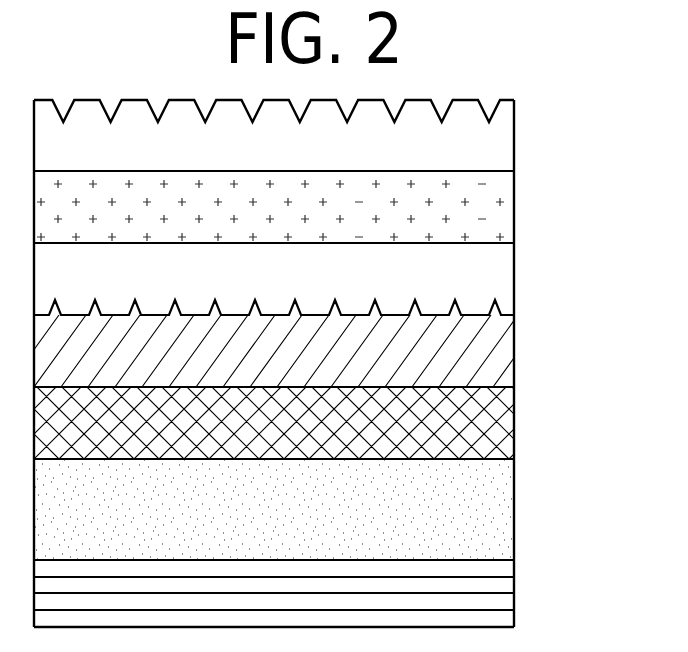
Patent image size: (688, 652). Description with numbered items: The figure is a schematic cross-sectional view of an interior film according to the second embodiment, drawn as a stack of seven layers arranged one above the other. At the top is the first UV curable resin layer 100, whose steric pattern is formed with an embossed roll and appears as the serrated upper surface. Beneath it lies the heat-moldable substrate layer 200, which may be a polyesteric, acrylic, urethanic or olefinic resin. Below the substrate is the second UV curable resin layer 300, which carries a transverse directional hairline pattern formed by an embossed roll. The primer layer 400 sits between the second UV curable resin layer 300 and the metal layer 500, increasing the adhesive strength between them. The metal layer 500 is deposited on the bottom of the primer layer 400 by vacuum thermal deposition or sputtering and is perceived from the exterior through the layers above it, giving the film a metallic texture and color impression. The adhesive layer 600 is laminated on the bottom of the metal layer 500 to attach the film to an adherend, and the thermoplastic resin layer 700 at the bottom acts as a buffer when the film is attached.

The first UV curable resin layer 100 is at (508, 135).
The substrate layer 200 is at (508, 205).
The second UV curable resin layer 300 is at (508, 273).
The primer layer 400 is at (508, 348).
The metal layer 500 is at (508, 422).
The adhesive layer 600 is at (508, 507).
The thermoplastic resin layer 700 is at (508, 598).